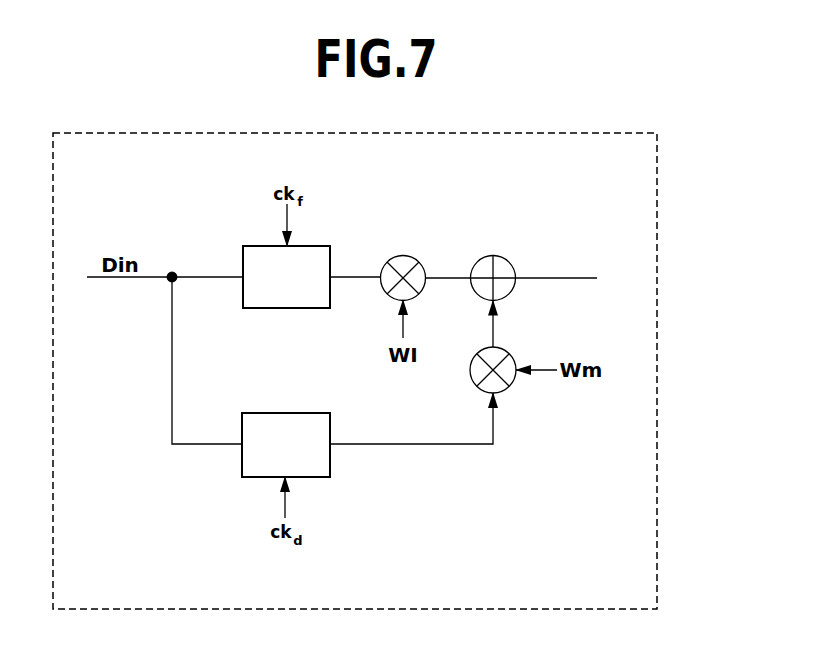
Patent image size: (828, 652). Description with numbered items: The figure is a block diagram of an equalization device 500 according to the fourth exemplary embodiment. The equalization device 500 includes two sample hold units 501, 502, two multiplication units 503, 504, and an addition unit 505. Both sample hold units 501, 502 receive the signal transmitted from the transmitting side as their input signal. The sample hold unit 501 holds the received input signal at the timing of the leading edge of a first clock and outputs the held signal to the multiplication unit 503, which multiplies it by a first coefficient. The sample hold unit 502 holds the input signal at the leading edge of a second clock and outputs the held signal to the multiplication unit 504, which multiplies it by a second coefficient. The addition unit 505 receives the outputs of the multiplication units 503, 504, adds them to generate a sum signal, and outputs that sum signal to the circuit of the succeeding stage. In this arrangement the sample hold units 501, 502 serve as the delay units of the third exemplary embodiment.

The equalization device 500 is at (659, 243).
The sample hold unit 501 is at (253, 246).
The sample hold unit 502 is at (330, 458).
The multiplication unit 503 is at (405, 256).
The multiplication unit 504 is at (505, 389).
The addition unit 505 is at (500, 256).